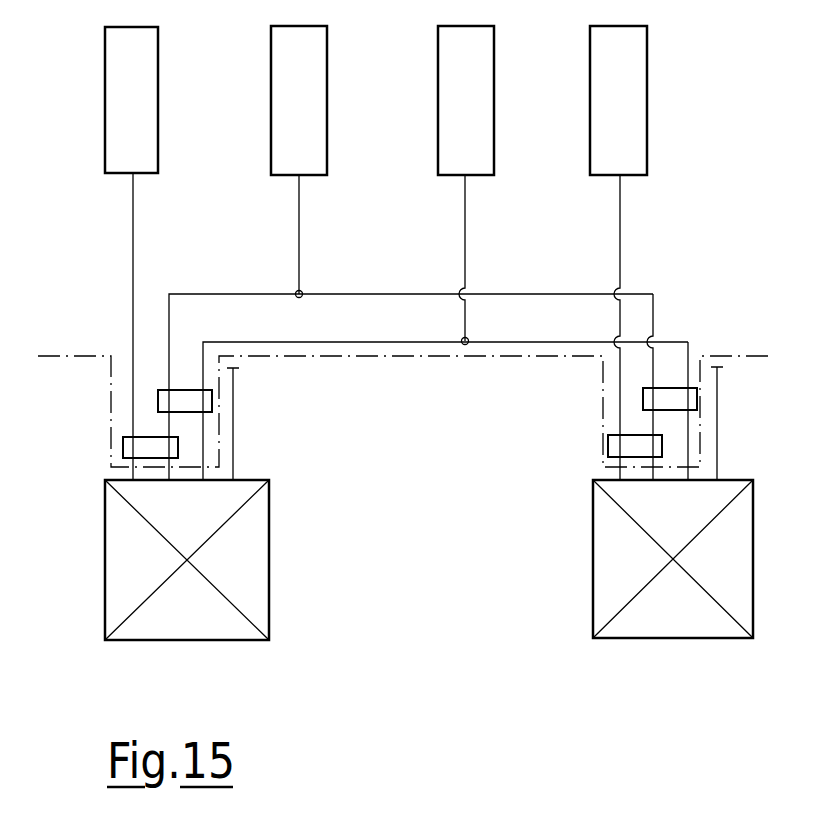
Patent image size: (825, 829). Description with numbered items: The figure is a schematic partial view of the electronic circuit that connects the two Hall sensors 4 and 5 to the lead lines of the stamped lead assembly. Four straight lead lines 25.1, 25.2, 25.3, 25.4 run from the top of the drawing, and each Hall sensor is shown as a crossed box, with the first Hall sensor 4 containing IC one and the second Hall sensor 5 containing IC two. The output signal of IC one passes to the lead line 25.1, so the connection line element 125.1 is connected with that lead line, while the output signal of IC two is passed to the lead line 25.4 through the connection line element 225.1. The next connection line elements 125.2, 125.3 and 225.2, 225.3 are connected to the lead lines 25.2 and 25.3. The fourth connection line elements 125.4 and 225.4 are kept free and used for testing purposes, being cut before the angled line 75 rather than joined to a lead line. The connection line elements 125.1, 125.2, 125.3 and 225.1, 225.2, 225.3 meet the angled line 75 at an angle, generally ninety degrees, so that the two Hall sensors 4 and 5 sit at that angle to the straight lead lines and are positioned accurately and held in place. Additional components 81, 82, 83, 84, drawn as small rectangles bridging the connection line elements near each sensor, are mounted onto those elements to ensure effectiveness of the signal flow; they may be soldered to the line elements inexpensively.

The lead line 25.1 is at (120, 86).
The lead line 25.2 is at (284, 90).
The lead line 25.3 is at (447, 88).
The lead line 25.4 is at (634, 95).
The connection line element 125.1 is at (132, 302).
The connection line element 125.2 is at (169, 337).
The connection line element 125.3 is at (203, 453).
The fourth connection line element 125.4 is at (233, 397).
The connection line element 225.1 is at (620, 407).
The connection line element 225.2 is at (653, 362).
The connection line element 225.3 is at (688, 347).
The fourth connection line element 225.4 is at (718, 403).
The angled line 75 is at (563, 352).
The additional component 81 is at (123, 447).
The additional component 82 is at (158, 400).
The additional component 83 is at (662, 443).
The additional component 84 is at (697, 407).
The Hall sensor 4 is at (237, 632).
The Hall sensor 5 is at (630, 628).